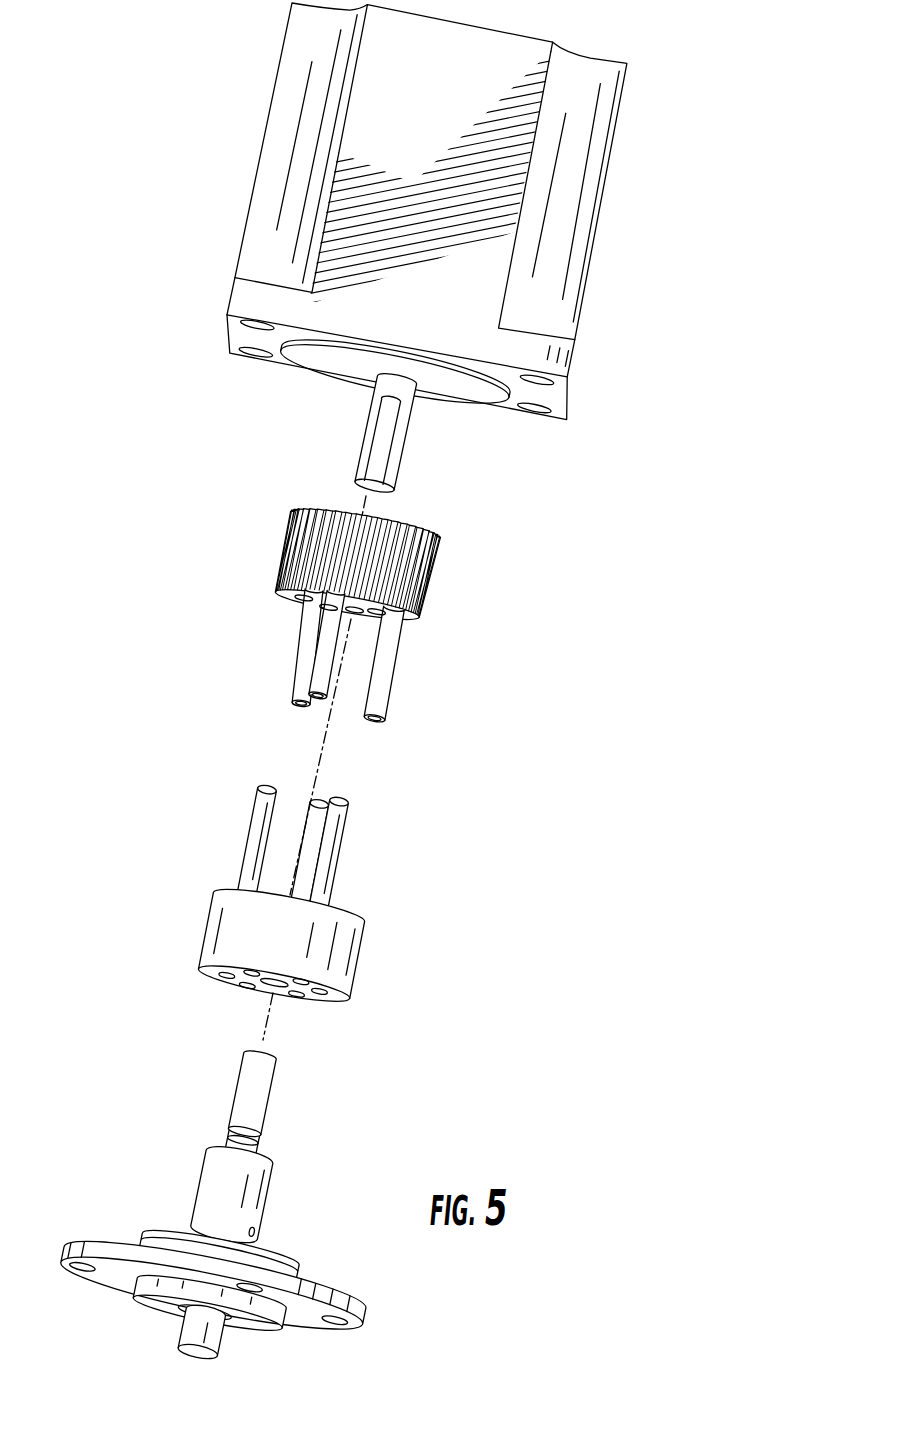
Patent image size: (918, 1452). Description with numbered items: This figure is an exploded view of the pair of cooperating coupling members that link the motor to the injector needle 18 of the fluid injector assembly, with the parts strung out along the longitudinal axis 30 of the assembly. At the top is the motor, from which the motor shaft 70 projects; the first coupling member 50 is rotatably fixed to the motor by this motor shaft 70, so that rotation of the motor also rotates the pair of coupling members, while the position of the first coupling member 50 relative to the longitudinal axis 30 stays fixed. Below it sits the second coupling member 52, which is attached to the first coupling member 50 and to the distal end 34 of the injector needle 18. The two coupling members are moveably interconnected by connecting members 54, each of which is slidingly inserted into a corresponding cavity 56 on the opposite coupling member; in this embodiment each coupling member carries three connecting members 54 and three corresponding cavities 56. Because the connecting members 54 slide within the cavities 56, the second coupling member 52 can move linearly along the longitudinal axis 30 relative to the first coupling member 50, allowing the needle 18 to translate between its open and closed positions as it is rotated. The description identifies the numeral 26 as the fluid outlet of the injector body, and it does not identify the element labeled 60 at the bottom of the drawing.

The fluid outlet 26 is at (587, 227).
The motor shaft 70 is at (402, 456).
The first coupling member 50 is at (430, 571).
The cavity 56 is at (300, 593).
The connecting member 54 is at (295, 669).
The longitudinal axis 30 is at (322, 742).
The second coupling member 52 is at (352, 962).
The distal end 34 is at (265, 1078).
The injector needle 18 is at (268, 1117).
The mounting flange 60 is at (357, 1311).